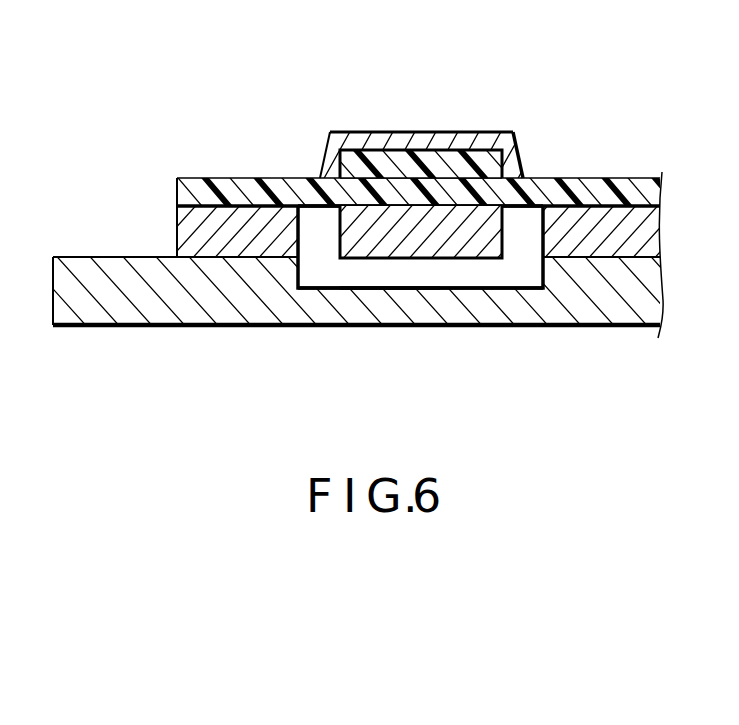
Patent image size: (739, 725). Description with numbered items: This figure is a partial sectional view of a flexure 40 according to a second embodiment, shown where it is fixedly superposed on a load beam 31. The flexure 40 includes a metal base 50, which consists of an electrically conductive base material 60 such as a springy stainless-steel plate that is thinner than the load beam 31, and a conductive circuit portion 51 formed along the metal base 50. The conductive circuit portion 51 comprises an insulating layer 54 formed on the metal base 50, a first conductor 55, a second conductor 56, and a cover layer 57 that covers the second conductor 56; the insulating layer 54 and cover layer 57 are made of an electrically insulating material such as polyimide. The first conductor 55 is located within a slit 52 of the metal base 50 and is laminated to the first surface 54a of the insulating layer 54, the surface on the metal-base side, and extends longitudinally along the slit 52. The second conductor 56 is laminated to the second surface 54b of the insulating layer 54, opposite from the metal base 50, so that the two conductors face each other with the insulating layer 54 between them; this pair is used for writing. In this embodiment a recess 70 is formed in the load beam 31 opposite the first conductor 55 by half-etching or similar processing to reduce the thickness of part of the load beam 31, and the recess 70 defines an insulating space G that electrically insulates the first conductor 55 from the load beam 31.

The load beam 31 is at (185, 298).
The flexure 40 is at (441, 195).
The metal base 50 is at (187, 233).
The conductive circuit portion 51 is at (227, 153).
The slit 52 is at (302, 229).
The insulating layer 54 is at (575, 177).
The first surface 54a is at (413, 208).
The second surface 54b is at (422, 170).
The first conductor 55 is at (463, 221).
The second conductor 56 is at (470, 167).
The cover layer 57 is at (373, 131).
The base material 60 is at (615, 239).
The recess 70 is at (372, 288).
The insulating space G is at (500, 267).